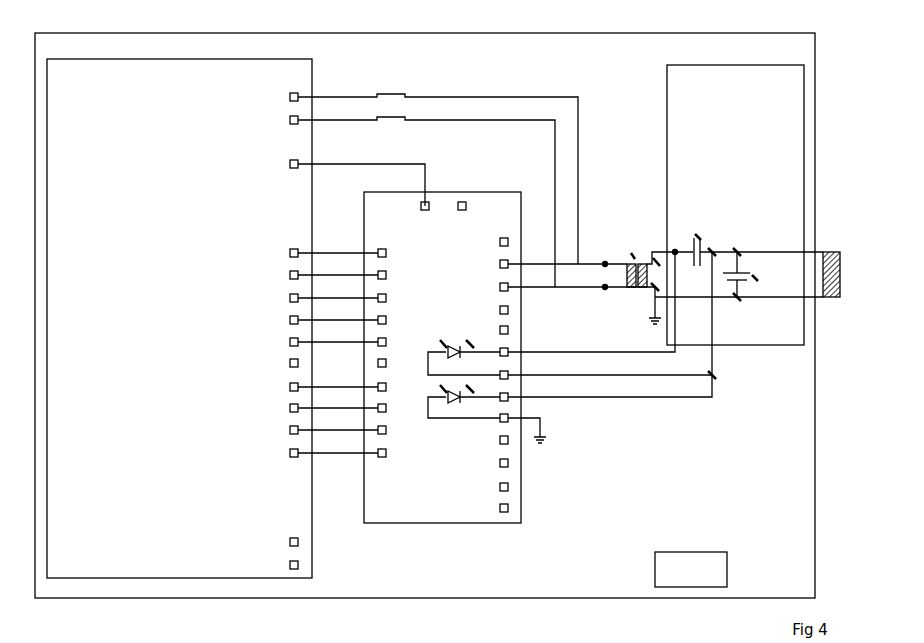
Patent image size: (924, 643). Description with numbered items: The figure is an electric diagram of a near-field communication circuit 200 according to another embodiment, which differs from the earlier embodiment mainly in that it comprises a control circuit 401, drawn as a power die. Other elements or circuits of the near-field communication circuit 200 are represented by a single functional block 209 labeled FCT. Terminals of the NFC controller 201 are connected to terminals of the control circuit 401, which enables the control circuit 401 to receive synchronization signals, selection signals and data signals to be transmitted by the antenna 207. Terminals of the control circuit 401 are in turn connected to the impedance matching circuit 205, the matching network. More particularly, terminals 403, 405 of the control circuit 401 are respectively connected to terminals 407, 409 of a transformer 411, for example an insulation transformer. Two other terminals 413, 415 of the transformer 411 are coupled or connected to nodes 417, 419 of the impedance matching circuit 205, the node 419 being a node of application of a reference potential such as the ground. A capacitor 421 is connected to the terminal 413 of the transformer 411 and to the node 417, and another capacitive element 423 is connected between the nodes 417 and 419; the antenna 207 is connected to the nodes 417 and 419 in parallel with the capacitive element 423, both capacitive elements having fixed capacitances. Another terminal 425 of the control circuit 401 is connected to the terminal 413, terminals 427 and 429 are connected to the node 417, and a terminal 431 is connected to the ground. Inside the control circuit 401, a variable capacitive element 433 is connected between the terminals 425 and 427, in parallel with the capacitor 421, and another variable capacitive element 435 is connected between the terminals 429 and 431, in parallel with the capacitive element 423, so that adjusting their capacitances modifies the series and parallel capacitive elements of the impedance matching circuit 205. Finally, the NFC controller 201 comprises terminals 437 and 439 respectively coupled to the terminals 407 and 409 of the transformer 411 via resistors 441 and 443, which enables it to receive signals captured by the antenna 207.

The near-field communication circuit 200 is at (500, 33).
The NFC controller 201 is at (175, 59).
The impedance matching circuit 205 is at (667, 90).
The antenna 207 is at (831, 250).
The functional block 209 is at (727, 572).
The control circuit 401 is at (490, 192).
The terminal 403 is at (500, 264).
The terminal 405 is at (500, 287).
The terminal 407 is at (605, 262).
The terminal 409 is at (605, 290).
The transformer 411 is at (633, 256).
The terminal 413 is at (656, 260).
The terminal 415 is at (654, 290).
The node 417 is at (737, 250).
The node 419 is at (737, 300).
The capacitor 421 is at (698, 236).
The capacitive element 423 is at (756, 278).
The terminal 425 is at (508, 352).
The terminal 427 is at (508, 375).
The terminal 429 is at (508, 397).
The terminal 431 is at (508, 418).
The variable capacitive element 433 is at (444, 344).
The variable capacitive element 435 is at (444, 390).
The terminal 437 is at (290, 97).
The terminal 439 is at (290, 120).
The resistor 441 is at (392, 94).
The resistor 443 is at (393, 123).